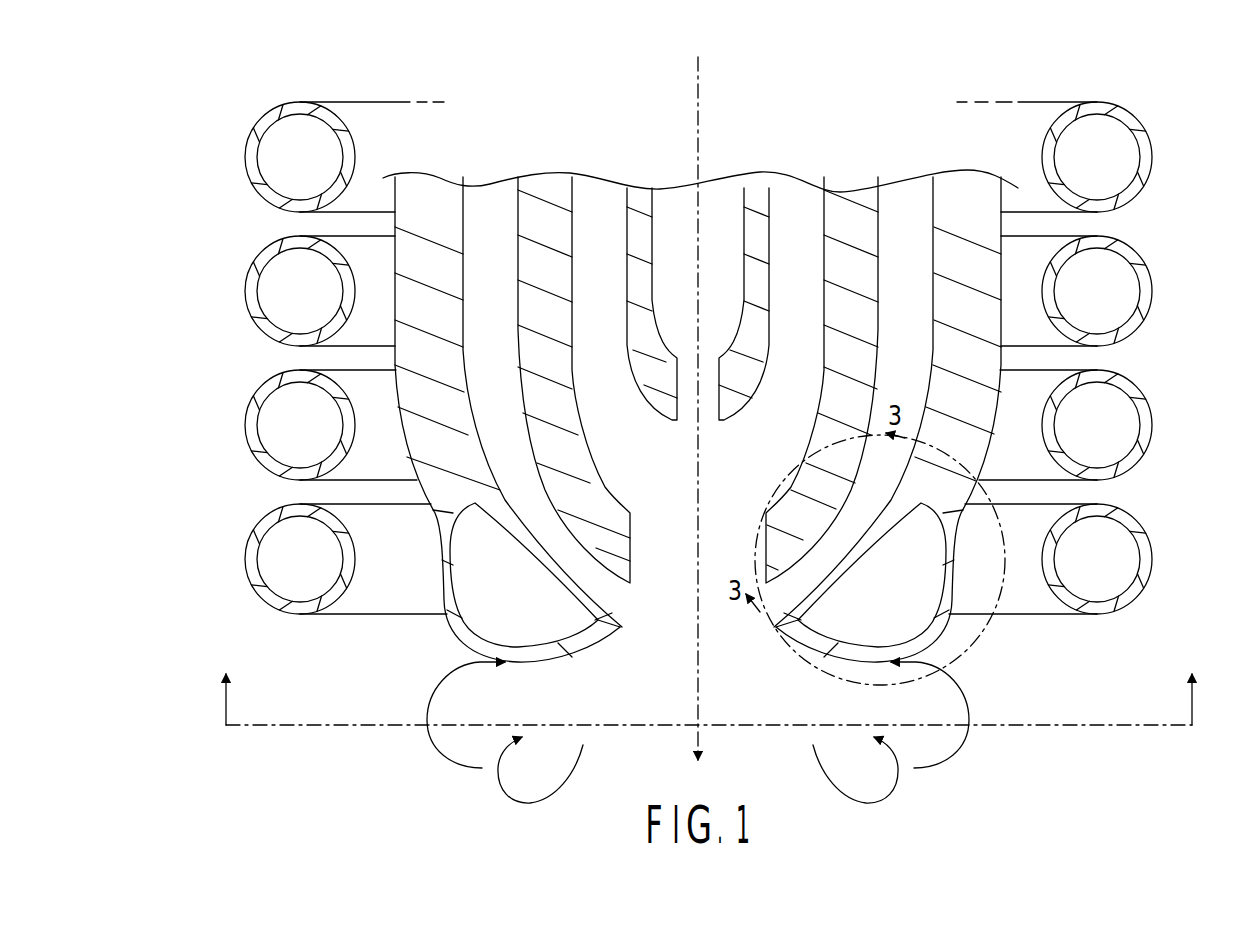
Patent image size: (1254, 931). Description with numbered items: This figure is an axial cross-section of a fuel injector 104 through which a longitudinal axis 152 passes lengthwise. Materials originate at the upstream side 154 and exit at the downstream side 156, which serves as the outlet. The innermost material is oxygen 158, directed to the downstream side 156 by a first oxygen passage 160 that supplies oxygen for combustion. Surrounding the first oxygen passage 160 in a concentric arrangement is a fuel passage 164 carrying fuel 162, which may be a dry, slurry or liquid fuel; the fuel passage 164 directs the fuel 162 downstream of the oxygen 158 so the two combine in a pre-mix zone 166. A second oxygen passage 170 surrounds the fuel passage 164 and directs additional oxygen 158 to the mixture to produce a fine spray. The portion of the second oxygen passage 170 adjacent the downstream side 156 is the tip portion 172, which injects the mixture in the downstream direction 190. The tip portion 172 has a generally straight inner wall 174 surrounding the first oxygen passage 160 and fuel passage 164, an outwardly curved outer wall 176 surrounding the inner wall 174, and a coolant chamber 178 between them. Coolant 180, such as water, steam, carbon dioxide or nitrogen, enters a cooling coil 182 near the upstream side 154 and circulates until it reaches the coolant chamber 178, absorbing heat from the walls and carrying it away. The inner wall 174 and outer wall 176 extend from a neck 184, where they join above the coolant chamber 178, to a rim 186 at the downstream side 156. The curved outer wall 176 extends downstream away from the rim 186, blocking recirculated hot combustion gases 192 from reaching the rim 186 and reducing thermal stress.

The fuel injector 104 is at (912, 70).
The longitudinal axis 152 is at (702, 113).
The upstream side 154 is at (652, 85).
The downstream side 156 is at (658, 662).
The oxygen 158 is at (720, 208).
The first oxygen passage 160 is at (645, 190).
The fuel 162 is at (797, 221).
The fuel passage 164 is at (553, 185).
The pre-mix zone 166 is at (665, 500).
The second oxygen passage 170 is at (430, 200).
The tip portion 172 is at (827, 664).
The inner wall 174 is at (825, 535).
The outer wall 176 is at (952, 655).
The coolant chamber 178 is at (898, 594).
The coolant 180 is at (1105, 136).
The cooling coil 182 is at (1145, 145).
The neck 184 is at (990, 490).
The rim 186 is at (770, 622).
The downstream direction 190 is at (698, 733).
The hot combustion gases 192 is at (452, 770).